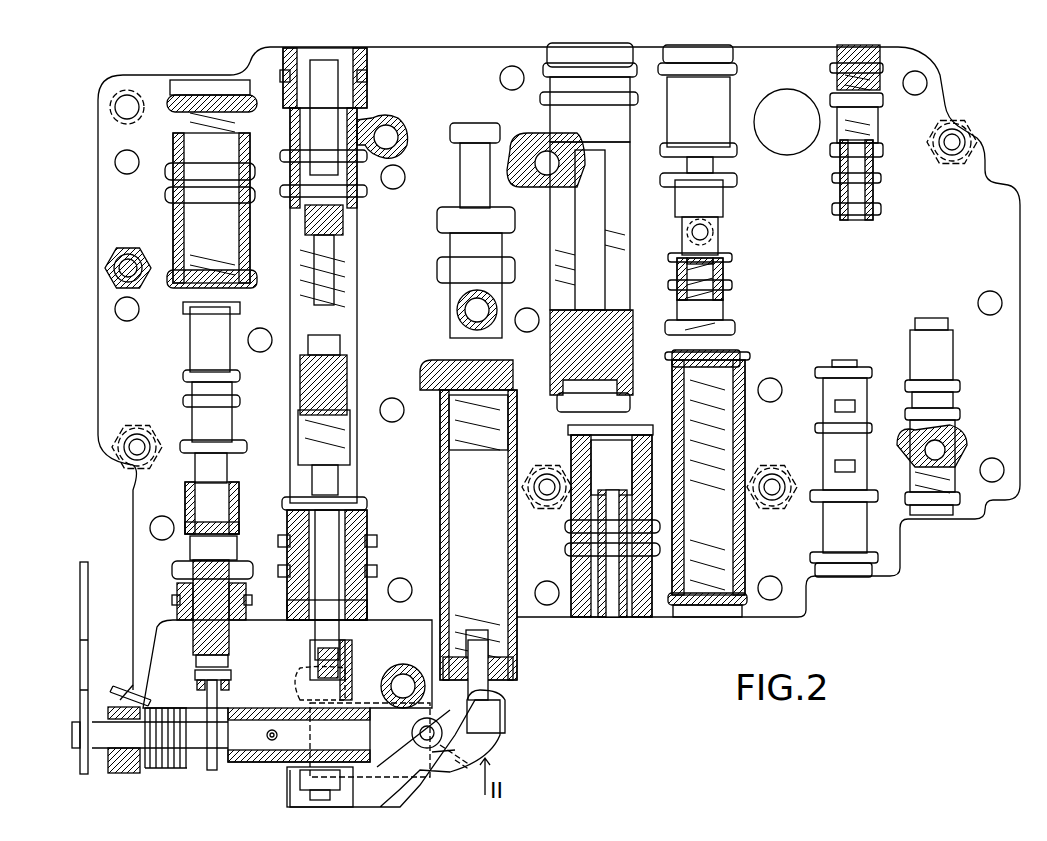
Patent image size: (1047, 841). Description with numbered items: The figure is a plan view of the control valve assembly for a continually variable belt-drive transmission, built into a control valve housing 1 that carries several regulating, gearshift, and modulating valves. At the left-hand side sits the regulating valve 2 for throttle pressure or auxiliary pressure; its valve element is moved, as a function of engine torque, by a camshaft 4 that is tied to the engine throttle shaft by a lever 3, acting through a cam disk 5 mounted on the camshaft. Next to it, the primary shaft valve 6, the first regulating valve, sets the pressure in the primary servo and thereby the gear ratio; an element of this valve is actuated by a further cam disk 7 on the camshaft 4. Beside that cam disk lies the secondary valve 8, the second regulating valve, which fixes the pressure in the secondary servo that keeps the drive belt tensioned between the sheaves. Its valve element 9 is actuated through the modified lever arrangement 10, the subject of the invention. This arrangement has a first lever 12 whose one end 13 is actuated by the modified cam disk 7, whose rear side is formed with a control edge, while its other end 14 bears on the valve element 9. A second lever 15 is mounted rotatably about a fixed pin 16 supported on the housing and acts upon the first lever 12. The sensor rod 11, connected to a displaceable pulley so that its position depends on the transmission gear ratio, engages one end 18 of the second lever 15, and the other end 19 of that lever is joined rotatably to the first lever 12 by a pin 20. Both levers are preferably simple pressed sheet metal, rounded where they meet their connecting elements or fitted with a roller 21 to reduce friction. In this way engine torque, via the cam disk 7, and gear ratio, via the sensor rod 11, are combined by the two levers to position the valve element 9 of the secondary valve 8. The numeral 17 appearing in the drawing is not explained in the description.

The control valve housing 1 is at (1000, 386).
The regulating valve 2 is at (170, 502).
The lever 3 is at (80, 632).
The camshaft 4 is at (240, 752).
The cam disk 5 is at (210, 735).
The primary shaft valve 6 is at (378, 374).
The cam disk 7 is at (322, 762).
The secondary valve 8 is at (530, 440).
The valve element 9 is at (505, 667).
The lever arrangement 10 is at (444, 756).
The sensor rod 11 is at (306, 660).
The first lever 12 is at (405, 780).
The end of first lever 13 is at (300, 773).
The other end of first lever 14 is at (505, 695).
The second lever 15 is at (352, 700).
The fixed pin 16 is at (403, 675).
The pivot pin 17 is at (447, 775).
The end of second lever 18 is at (338, 660).
The other end of second lever 19 is at (470, 740).
The pin 20 is at (442, 730).
The roller 21 is at (315, 797).